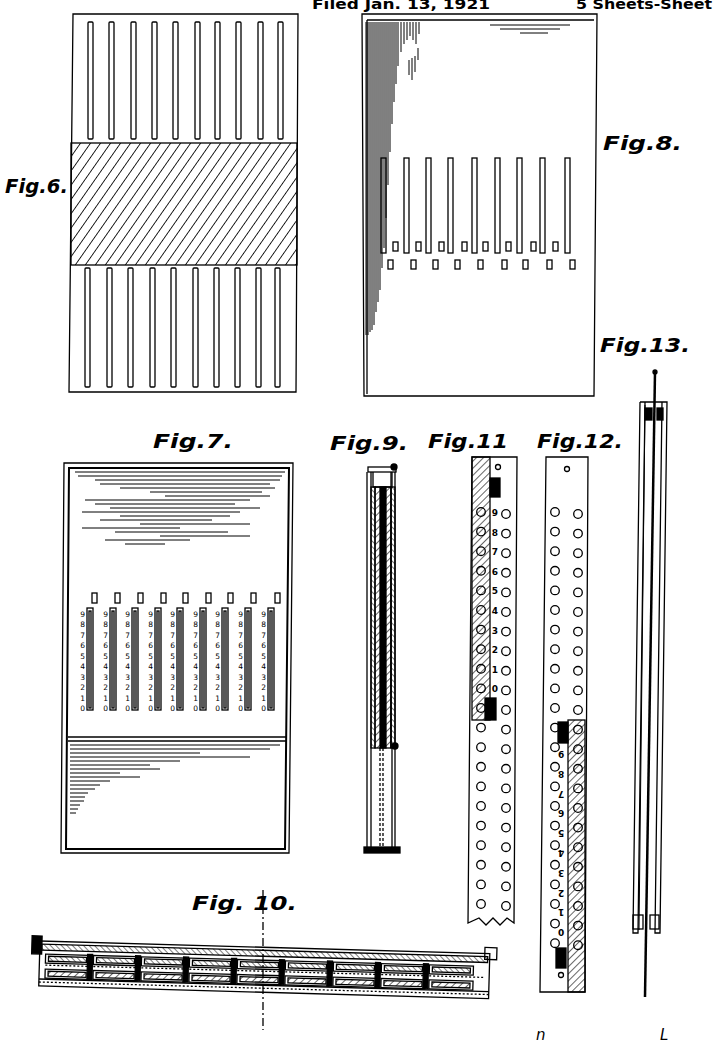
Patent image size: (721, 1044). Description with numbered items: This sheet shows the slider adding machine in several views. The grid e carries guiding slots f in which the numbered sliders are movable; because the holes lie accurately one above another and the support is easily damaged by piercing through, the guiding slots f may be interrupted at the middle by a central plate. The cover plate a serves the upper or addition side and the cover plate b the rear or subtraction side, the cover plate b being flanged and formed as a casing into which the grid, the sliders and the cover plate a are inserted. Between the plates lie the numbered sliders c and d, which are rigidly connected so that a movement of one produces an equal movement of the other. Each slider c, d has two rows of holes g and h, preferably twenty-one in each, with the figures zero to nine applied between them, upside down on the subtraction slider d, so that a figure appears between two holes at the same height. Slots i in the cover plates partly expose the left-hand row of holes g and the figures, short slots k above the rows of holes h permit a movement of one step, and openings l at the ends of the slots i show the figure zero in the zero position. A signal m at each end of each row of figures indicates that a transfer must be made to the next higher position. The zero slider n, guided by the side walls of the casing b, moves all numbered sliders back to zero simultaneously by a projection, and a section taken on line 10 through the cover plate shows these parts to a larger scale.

In FIG. 7, the cover plate a is at (272, 552).
In FIG. 9, the cover plate a is at (396, 550).
In FIG. 10, the cover plate a is at (265, 942).
In FIG. 8, the cover plate b is at (580, 86).
In FIG. 9, the cover plate b is at (372, 547).
In FIG. 10, the cover plate b is at (263, 1003).
In FIG. 13, the numbered slider c is at (660, 600).
In FIG. 9, the numbered slider c is at (392, 689).
In FIG. 11, the numbered slider c is at (470, 658).
In FIG. 10, the numbered slider c is at (259, 942).
In FIG. 13, the numbered slider d is at (640, 602).
In FIG. 9, the numbered slider d is at (373, 663).
In FIG. 12, the numbered slider d is at (548, 660).
In FIG. 10, the numbered slider d is at (258, 993).
In FIG. 6, the grid e is at (298, 86).
In FIG. 13, the grid e is at (647, 960).
In FIG. 9, the grid e is at (384, 763).
In FIG. 10, the grid e is at (265, 939).
In FIG. 6, the grid guiding slots f is at (262, 63).
In FIG. 11, the holes g is at (476, 832).
In FIG. 11, the holes h is at (507, 812).
In FIG. 8, the slots i is at (543, 221).
In FIG. 7, the slots i is at (233, 702).
In FIG. 10, the slots i is at (266, 949).
In FIG. 8, the short slots k is at (532, 252).
In FIG. 7, the short slots k is at (120, 600).
In FIG. 8, the openings l is at (522, 269).
In FIG. 7, the openings l is at (222, 590).
In FIG. 11, the signal m is at (500, 488).
In FIG. 12, the signal m is at (570, 723).
In FIG. 7, the zero slider n is at (177, 776).
In FIG. 9, the zero slider n is at (394, 808).
In FIG. 10, the zero slider n is at (264, 953).
In FIG. 7, the section line 10 is at (176, 690).